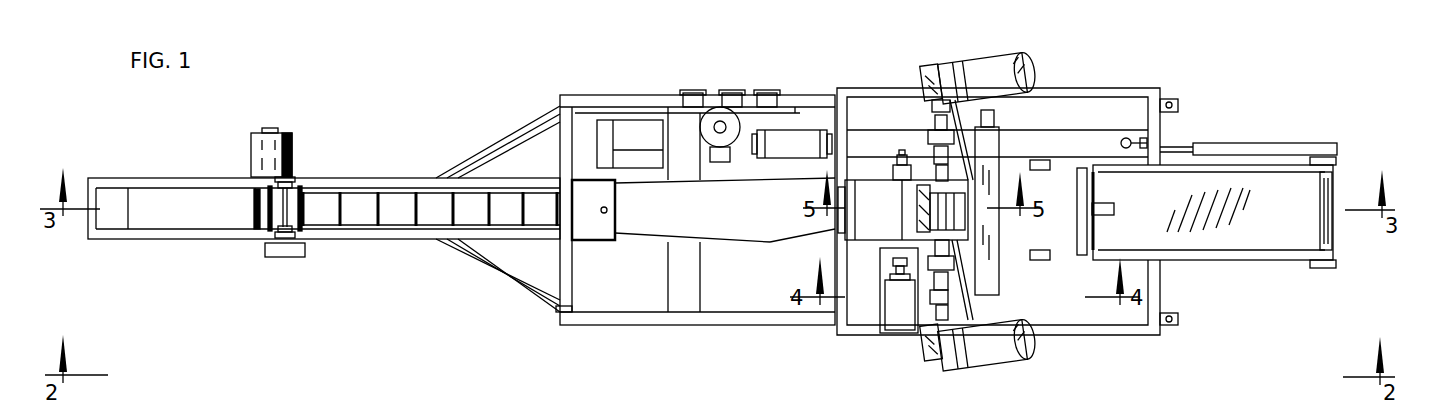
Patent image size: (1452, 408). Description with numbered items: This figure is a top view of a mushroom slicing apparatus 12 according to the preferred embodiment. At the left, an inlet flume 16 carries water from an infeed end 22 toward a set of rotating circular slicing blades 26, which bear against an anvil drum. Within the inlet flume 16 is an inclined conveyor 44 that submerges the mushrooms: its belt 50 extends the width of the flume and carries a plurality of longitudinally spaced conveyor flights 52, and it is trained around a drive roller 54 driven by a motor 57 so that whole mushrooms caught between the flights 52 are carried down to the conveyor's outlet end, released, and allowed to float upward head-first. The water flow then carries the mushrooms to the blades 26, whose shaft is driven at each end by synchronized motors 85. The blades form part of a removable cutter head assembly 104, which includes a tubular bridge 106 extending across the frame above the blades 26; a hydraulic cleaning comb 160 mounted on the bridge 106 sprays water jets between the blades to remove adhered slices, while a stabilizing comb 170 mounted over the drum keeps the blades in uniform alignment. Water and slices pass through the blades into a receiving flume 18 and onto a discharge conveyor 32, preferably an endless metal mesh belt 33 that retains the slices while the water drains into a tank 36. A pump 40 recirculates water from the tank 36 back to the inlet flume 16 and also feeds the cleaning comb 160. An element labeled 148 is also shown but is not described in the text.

The mushroom slicing apparatus 12 is at (1192, 73).
The inlet flume 16 is at (157, 196).
The receiving flume 18 is at (1217, 215).
The infeed end 22 is at (112, 198).
The rotating circular slicing blades 26 is at (933, 188).
The discharge conveyor 32 is at (1345, 251).
The endless metal mesh belt 33 is at (1330, 188).
The tank 36 is at (1128, 337).
The pump 40 is at (800, 140).
The inclined conveyor 44 is at (440, 205).
The belt 50 is at (322, 203).
The conveyor flights 52 is at (373, 207).
The drive roller 54 is at (268, 215).
The motor 57 is at (251, 142).
The synchronized motors 85 is at (985, 70).
The cutter head assembly 104 is at (934, 55).
The bridge 106 is at (993, 270).
The cylinder assembly 148 is at (883, 305).
The hydraulic cleaning comb 160 is at (965, 225).
The stabilizing comb 170 is at (940, 200).